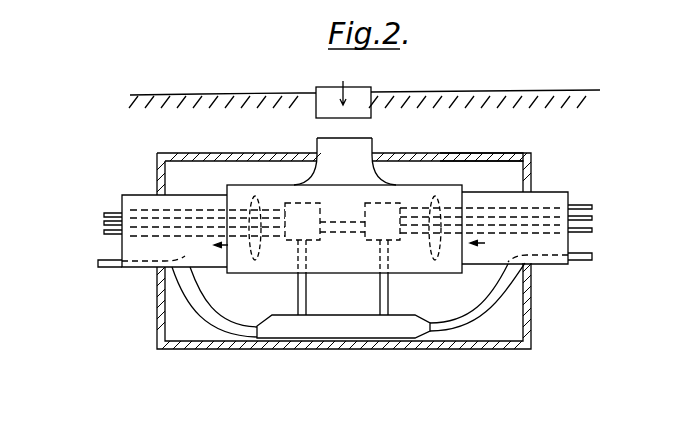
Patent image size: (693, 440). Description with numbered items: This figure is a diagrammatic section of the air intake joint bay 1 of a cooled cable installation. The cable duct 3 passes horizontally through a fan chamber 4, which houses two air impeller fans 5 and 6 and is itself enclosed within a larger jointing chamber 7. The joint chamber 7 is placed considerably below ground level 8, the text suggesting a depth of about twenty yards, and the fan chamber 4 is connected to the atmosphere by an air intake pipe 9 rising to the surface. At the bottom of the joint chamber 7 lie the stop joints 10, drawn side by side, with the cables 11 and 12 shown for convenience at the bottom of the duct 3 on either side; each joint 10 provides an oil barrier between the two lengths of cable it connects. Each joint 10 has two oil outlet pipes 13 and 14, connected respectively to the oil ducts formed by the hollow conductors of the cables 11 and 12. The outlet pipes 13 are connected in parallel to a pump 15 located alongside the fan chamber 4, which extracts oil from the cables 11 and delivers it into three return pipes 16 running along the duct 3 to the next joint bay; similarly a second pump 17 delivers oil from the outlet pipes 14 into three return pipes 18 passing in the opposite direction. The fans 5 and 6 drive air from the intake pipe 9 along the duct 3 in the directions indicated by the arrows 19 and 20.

The air intake joint bay 1 is at (168, 360).
The cable duct 3 is at (140, 194).
The fan chamber 4 is at (406, 185).
The air impeller fan 5 is at (255, 196).
The air impeller fan 6 is at (443, 196).
The jointing chamber 7 is at (478, 155).
The ground level 8 is at (518, 90).
The air intake pipe 9 is at (370, 88).
The stop joint 10 is at (398, 327).
The cable 11 is at (114, 268).
The cable 12 is at (592, 257).
The oil outlet pipe 13 is at (298, 288).
The oil outlet pipe 14 is at (390, 285).
The pump 15 is at (303, 229).
The return pipe 16 is at (103, 232).
The pump 17 is at (383, 233).
The return pipe 18 is at (592, 230).
The arrow 19 is at (235, 254).
The arrow 20 is at (482, 251).